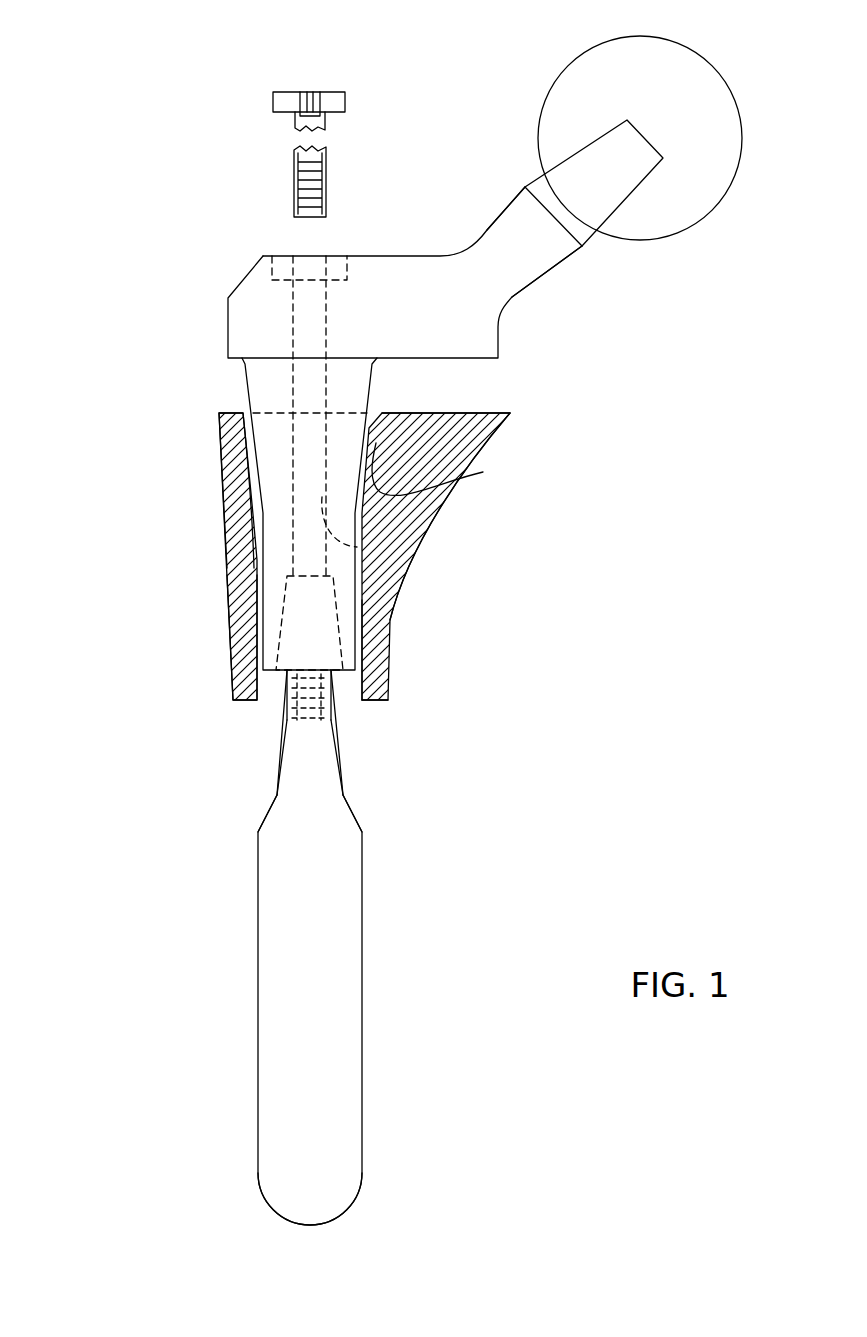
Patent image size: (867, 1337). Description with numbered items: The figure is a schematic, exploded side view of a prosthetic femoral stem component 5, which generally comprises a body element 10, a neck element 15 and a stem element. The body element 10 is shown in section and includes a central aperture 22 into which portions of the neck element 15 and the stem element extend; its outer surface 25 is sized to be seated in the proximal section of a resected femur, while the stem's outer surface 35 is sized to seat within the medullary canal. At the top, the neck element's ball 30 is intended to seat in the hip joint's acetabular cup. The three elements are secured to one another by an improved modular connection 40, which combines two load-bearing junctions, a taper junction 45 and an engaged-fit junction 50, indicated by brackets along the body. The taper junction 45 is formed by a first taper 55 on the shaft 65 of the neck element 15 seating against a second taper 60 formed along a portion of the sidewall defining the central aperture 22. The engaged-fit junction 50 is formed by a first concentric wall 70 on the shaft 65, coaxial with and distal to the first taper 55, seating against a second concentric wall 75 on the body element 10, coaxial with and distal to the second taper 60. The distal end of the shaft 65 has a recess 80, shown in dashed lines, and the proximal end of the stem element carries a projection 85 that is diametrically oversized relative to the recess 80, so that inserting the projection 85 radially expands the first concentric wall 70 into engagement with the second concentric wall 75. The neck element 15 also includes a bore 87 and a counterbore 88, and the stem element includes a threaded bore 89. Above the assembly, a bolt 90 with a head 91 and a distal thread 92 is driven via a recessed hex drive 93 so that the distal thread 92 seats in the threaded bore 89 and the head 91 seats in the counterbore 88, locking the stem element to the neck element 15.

The prosthetic femoral stem component 5 is at (190, 950).
The body element 10 is at (428, 555).
The neck element 15 is at (512, 335).
The central aperture 22 is at (268, 705).
The outer surface 25 is at (402, 578).
The ball 30 is at (718, 215).
The outer surface 35 is at (363, 1022).
The modular connection 40 is at (95, 415).
The taper junction 45 is at (180, 415).
The engaged-fit junction 50 is at (180, 575).
The first taper 55 is at (368, 428).
The second taper 60 is at (445, 469).
The shaft 65 is at (380, 390).
The first concentric wall 70 is at (358, 626).
The second concentric wall 75 is at (386, 686).
The recess 80 is at (283, 632).
The projection 85 is at (320, 745).
The bore 87 is at (360, 546).
The counterbore 88 is at (338, 257).
The threaded bore 89 is at (326, 705).
The bolt 90 is at (265, 153).
The head 91 is at (272, 101).
The distal thread 92 is at (295, 183).
The recessed hex drive 93 is at (312, 92).